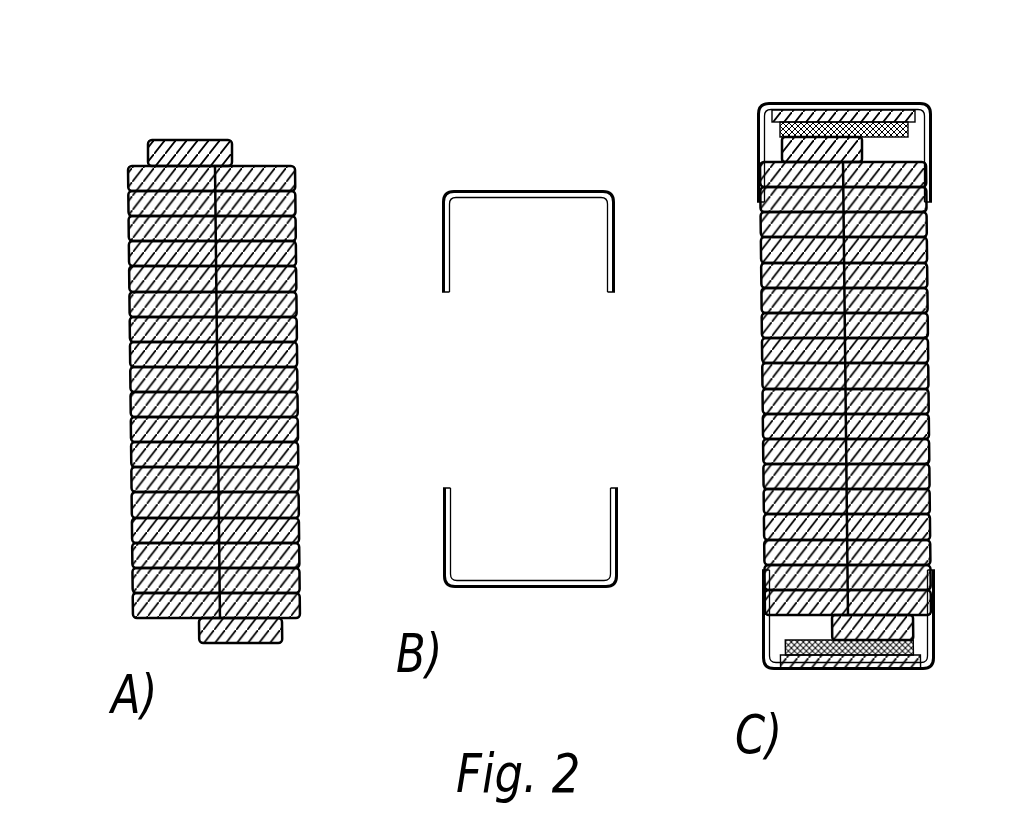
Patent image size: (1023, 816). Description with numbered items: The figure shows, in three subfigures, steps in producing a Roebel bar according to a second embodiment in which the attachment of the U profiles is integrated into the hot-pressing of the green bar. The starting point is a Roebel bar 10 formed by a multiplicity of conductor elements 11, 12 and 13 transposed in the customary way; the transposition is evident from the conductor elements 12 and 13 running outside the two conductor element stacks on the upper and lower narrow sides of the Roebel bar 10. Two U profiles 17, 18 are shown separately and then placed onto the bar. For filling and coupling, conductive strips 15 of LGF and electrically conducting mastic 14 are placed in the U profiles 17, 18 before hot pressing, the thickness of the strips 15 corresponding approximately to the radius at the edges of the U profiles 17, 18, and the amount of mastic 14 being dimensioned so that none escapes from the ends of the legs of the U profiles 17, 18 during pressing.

The Roebel bar 10 is at (569, 389).
The conductor elements 11 is at (300, 382).
The conductor element 12 is at (190, 148).
The conductor element 13 is at (240, 644).
The electrically conducting mastic 14 is at (808, 112).
The conductive strips of LGF 15 is at (853, 114).
The U profile 17 is at (528, 192).
The U profile 18 is at (548, 588).